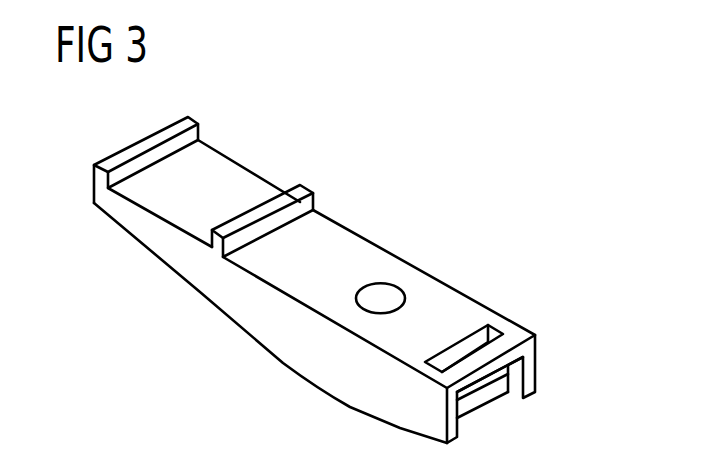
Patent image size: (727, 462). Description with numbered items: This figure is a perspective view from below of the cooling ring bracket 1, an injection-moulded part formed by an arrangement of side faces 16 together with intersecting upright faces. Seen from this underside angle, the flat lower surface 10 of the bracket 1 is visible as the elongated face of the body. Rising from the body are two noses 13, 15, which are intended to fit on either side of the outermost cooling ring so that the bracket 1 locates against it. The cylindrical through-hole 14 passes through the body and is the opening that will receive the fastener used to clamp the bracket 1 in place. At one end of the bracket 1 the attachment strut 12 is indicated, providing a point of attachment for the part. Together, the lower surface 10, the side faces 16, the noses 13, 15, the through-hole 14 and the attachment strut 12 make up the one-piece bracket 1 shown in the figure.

The cooling ring bracket 1 is at (498, 160).
The flat lower surface 10 is at (457, 307).
The attachment strut 12 is at (482, 400).
The nose 13 is at (301, 190).
The through-hole 14 is at (383, 296).
The nose 15 is at (186, 124).
The side face 16 is at (335, 388).